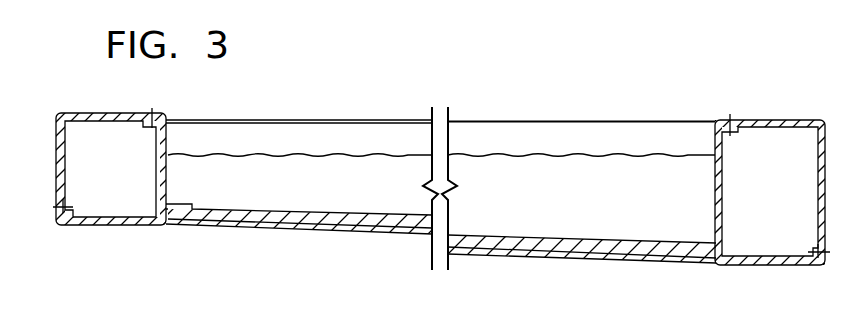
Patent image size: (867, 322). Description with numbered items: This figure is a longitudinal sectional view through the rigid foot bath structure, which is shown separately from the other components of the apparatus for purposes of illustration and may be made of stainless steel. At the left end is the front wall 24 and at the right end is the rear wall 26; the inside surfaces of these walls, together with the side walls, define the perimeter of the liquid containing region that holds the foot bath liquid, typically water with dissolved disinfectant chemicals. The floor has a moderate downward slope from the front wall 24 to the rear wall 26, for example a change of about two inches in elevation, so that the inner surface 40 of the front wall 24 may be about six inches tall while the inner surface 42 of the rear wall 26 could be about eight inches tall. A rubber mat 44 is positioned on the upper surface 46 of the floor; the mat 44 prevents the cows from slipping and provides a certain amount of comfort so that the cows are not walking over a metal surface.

The front wall 24 is at (103, 117).
The rear wall 26 is at (757, 120).
The inner surface of the front wall 40 is at (168, 143).
The inner surface of the rear wall 42 is at (717, 142).
The rubber mat 44 is at (267, 215).
The upper surface of the floor 46 is at (335, 223).